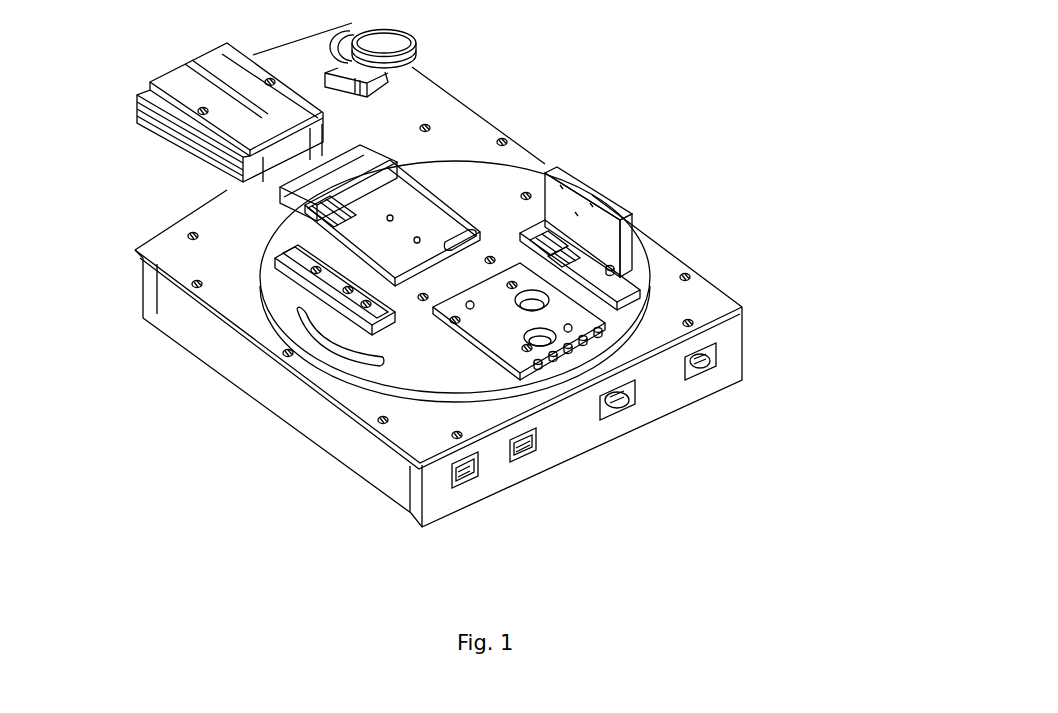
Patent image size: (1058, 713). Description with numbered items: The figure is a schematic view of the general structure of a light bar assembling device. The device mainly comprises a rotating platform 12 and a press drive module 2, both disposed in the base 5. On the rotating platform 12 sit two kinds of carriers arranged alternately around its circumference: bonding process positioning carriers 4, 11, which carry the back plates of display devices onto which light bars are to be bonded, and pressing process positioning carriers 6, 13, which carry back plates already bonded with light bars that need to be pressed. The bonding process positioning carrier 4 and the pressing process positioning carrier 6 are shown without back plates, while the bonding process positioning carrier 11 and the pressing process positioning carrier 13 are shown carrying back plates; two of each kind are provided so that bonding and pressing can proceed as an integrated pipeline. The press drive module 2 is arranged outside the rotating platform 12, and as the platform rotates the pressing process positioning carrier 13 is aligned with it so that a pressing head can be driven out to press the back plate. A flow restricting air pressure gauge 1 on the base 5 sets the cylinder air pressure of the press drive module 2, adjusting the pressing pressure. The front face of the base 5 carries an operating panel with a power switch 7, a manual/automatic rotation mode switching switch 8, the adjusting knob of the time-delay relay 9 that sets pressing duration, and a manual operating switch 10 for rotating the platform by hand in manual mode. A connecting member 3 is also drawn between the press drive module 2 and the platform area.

The flow restricting air pressure gauge 1 is at (393, 48).
The press drive module 2 is at (185, 85).
The connecting bar 3 is at (285, 188).
The bonding process positioning carrier 4 is at (287, 263).
The base 5 is at (232, 353).
The pressing process positioning carrier 6 is at (472, 332).
The power switch 7 is at (470, 487).
The manual/automatic rotation mode switching switch 8 is at (542, 457).
The time-delay relay 9 is at (637, 413).
The manual operating switch 10 is at (713, 362).
The bonding process positioning carrier 11 is at (642, 275).
The rotating platform 12 is at (483, 173).
The pressing process positioning carrier 13 is at (430, 210).